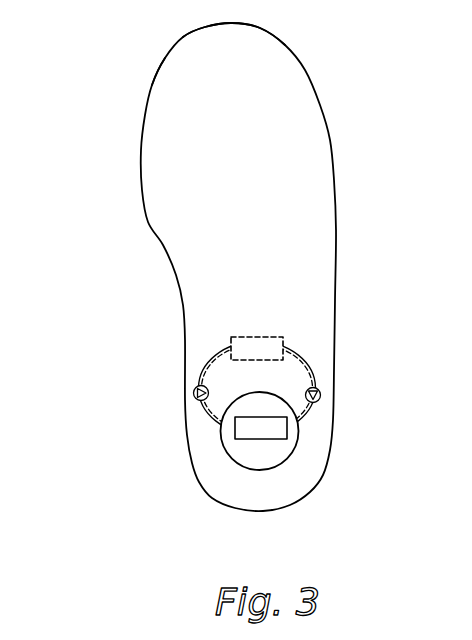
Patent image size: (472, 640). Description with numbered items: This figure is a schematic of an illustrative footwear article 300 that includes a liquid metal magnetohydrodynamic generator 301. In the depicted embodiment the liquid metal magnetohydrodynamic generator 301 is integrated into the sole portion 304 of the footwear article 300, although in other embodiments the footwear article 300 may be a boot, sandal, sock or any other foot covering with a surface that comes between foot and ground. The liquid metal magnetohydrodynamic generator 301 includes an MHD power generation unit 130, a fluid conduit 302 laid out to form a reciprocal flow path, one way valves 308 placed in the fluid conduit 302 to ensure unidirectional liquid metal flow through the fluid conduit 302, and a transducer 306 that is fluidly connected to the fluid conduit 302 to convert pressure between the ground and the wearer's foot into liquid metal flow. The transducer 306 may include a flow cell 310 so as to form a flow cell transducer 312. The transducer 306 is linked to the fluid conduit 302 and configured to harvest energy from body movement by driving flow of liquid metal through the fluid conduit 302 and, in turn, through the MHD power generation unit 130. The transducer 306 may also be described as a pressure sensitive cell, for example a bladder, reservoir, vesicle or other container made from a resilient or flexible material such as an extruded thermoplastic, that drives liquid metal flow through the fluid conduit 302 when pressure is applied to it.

The footwear article 300 is at (214, 279).
The liquid metal magnetohydrodynamic generator 301 is at (193, 459).
The sole portion 304 is at (286, 68).
The fluid conduit 302 is at (315, 366).
The MHD power generation unit 130 is at (264, 332).
The transducer 306 is at (257, 466).
The flow cell 310 is at (270, 432).
The flow cell transducer 312 is at (309, 439).
The one way valves 308 is at (194, 390).